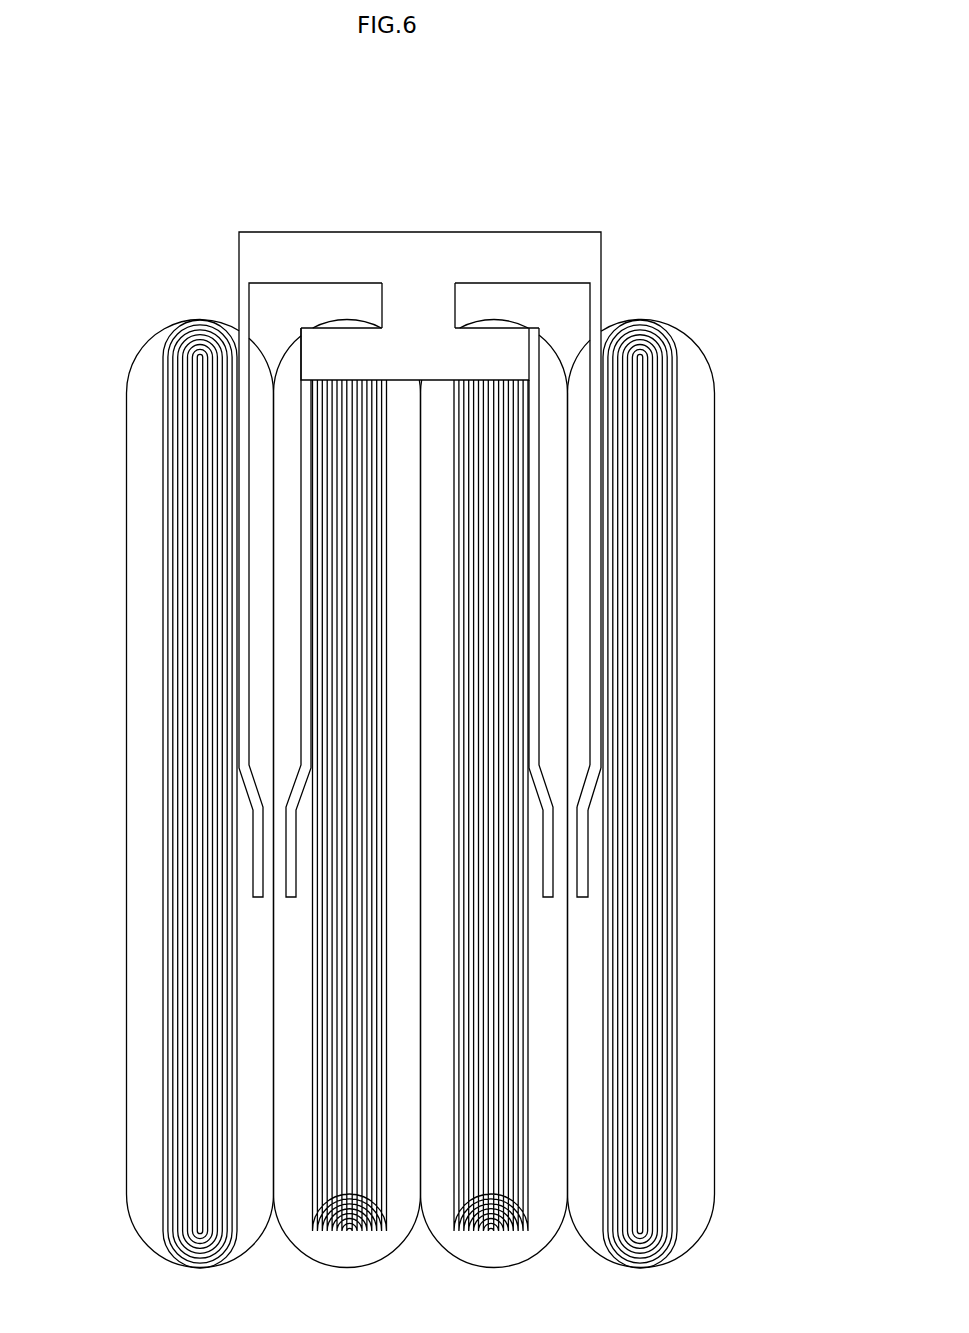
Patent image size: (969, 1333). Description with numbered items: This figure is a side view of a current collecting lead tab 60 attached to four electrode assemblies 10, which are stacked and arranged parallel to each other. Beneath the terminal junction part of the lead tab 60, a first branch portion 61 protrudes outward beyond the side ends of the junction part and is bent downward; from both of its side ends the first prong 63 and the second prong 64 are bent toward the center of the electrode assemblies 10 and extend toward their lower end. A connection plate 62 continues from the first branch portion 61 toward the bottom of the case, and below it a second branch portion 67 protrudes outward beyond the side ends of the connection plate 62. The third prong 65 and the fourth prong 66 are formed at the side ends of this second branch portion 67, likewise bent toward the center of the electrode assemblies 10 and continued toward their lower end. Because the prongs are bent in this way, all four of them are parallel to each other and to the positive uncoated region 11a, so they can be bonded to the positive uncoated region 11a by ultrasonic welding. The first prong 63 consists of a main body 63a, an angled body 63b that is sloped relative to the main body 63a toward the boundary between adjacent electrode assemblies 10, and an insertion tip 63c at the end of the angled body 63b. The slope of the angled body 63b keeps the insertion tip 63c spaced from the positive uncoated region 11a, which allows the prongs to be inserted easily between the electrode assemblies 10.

The electrode assembly 10 is at (695, 962).
The positive uncoated region 11a is at (660, 405).
The current collecting lead tab 60 is at (420, 226).
The first branch portion 61 is at (290, 245).
The connection plate 62 is at (415, 300).
The first prong 63 is at (684, 613).
The main body 63a is at (607, 694).
The angled body 63b is at (593, 798).
The insertion tip 63c is at (588, 873).
The second prong 64 is at (243, 627).
The third prong 65 is at (535, 567).
The fourth prong 66 is at (302, 496).
The second branch portion 67 is at (508, 355).